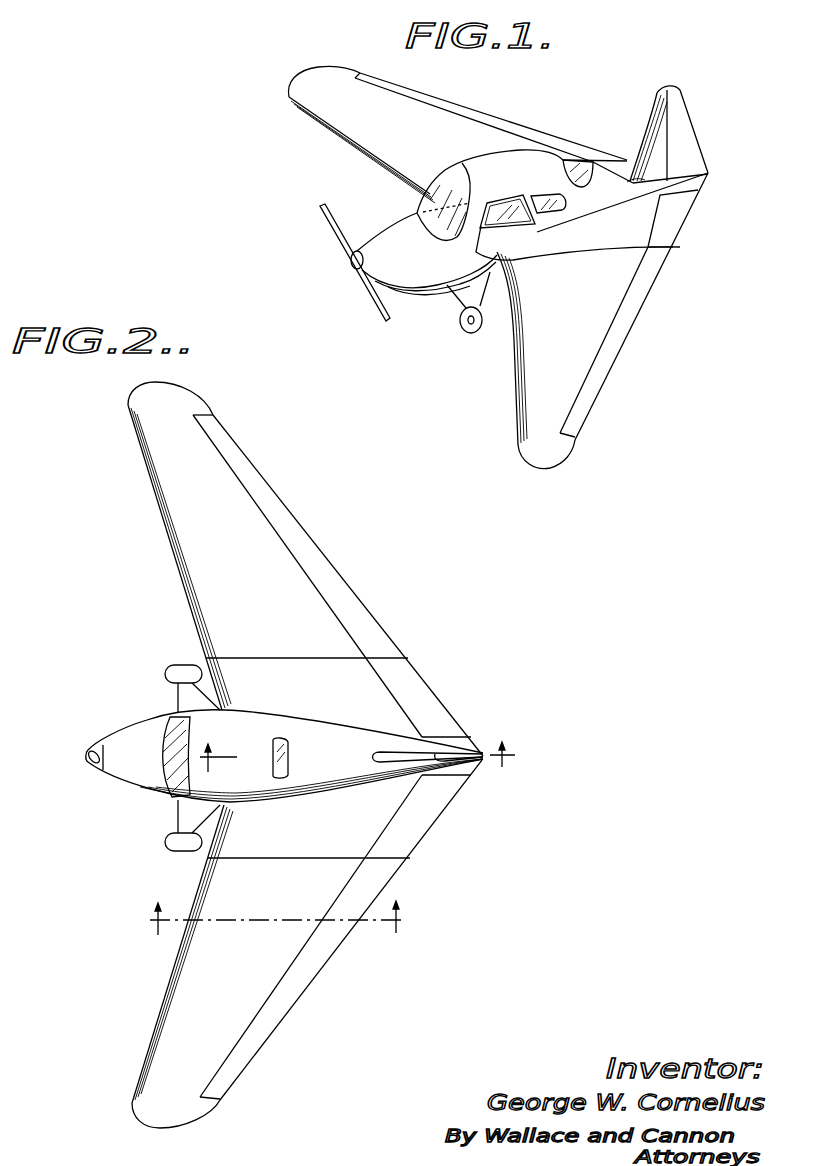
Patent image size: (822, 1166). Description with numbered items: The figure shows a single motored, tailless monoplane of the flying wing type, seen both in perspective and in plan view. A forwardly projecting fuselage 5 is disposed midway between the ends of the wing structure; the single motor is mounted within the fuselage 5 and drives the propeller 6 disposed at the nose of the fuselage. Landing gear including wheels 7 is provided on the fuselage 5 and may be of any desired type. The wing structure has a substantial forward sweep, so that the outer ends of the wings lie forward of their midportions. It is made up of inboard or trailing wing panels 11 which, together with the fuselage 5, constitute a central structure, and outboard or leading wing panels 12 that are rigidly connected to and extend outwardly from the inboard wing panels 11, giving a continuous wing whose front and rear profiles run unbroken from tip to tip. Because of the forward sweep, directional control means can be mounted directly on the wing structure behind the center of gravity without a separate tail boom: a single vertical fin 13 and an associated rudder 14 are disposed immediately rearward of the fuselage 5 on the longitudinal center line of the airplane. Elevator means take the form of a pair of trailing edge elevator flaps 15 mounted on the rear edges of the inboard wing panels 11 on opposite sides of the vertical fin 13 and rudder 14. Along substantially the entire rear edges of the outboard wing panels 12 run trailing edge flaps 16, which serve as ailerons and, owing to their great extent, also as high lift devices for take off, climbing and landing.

In FIG. 1, the fuselage 5 is at (441, 286).
In FIG. 2, the fuselage 5 is at (118, 820).
In FIG. 1, the propeller 6 is at (376, 316).
In FIG. 2, the propeller 6 is at (92, 762).
In FIG. 1, the wheels 7 is at (465, 335).
In FIG. 2, the wheels 7 is at (175, 851).
In FIG. 1, the inboard wing panels 11 is at (610, 250).
In FIG. 2, the inboard wing panels 11 is at (383, 632).
In FIG. 1, the outboard wing panels 12 is at (368, 135).
In FIG. 2, the outboard wing panels 12 is at (163, 472).
In FIG. 1, the vertical fin 13 is at (643, 122).
In FIG. 2, the vertical fin 13 is at (388, 757).
In FIG. 1, the rudder 14 is at (683, 132).
In FIG. 2, the rudder 14 is at (455, 757).
In FIG. 1, the elevator flaps 15 is at (625, 140).
In FIG. 2, the elevator flaps 15 is at (423, 695).
In FIG. 1, the trailing edge flaps 16 is at (472, 116).
In FIG. 2, the trailing edge flaps 16 is at (340, 582).